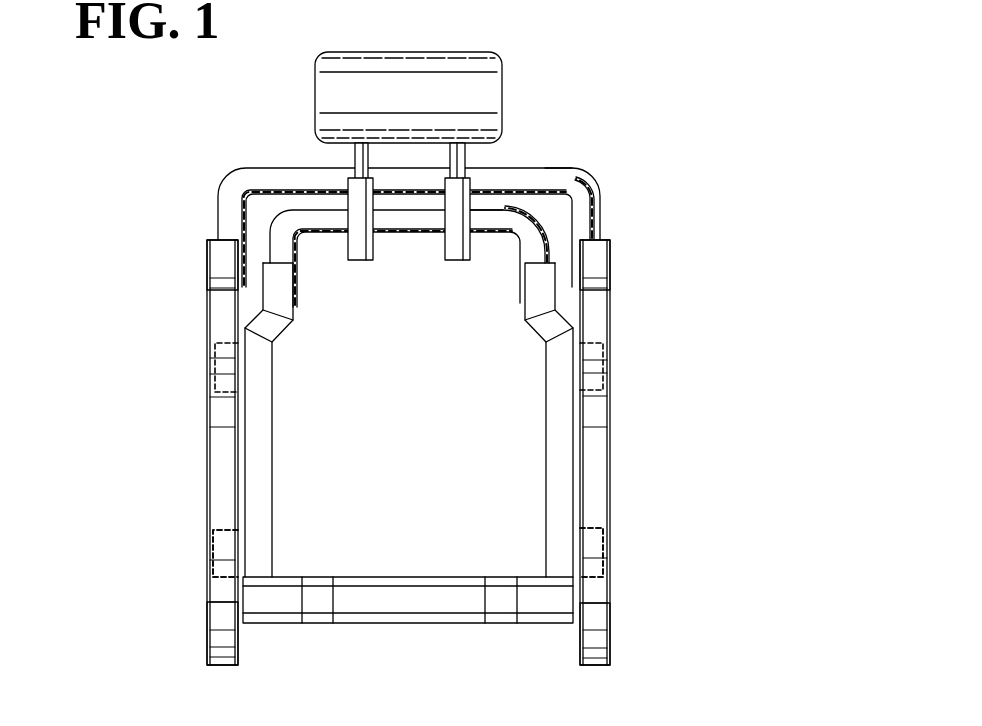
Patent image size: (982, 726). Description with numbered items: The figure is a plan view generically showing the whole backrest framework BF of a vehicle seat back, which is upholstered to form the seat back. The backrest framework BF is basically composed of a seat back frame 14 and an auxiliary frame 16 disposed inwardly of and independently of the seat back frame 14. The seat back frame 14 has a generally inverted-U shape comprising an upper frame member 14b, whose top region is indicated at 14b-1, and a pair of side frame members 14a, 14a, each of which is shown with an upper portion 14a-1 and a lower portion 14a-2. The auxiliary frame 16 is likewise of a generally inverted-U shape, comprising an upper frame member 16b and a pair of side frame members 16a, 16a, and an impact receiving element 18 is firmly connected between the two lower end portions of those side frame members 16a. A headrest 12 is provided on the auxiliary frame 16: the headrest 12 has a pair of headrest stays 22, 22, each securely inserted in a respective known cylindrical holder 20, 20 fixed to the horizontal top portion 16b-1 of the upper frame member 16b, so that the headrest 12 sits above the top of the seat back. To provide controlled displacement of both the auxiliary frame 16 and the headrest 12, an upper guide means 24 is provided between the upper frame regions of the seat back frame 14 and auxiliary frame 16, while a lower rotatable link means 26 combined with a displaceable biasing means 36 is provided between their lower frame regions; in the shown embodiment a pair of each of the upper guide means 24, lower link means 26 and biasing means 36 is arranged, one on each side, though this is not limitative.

The backrest framework BF is at (741, 62).
The headrest 12 is at (498, 80).
The seat back frame 14 is at (630, 170).
The side frame member 14a is at (208, 452).
The upper portion of side frame 14a-1 is at (210, 263).
The lower portion of side frame 14a-2 is at (207, 618).
The upper frame member 14b is at (425, 189).
The upper portion of upper frame 14b-1 is at (545, 165).
The auxiliary frame 16 is at (280, 488).
The side frame member 16a is at (275, 423).
The upper frame member 16b is at (427, 232).
The horizontal top portion 16b-1 is at (500, 206).
The impact receiving element 18 is at (423, 590).
The cylindrical holder 20 is at (357, 250).
The headrest stay 22 is at (355, 157).
The upper guide means 24 is at (208, 361).
The lower rotatable link means 26 is at (208, 534).
The displaceable biasing means 36 is at (334, 526).